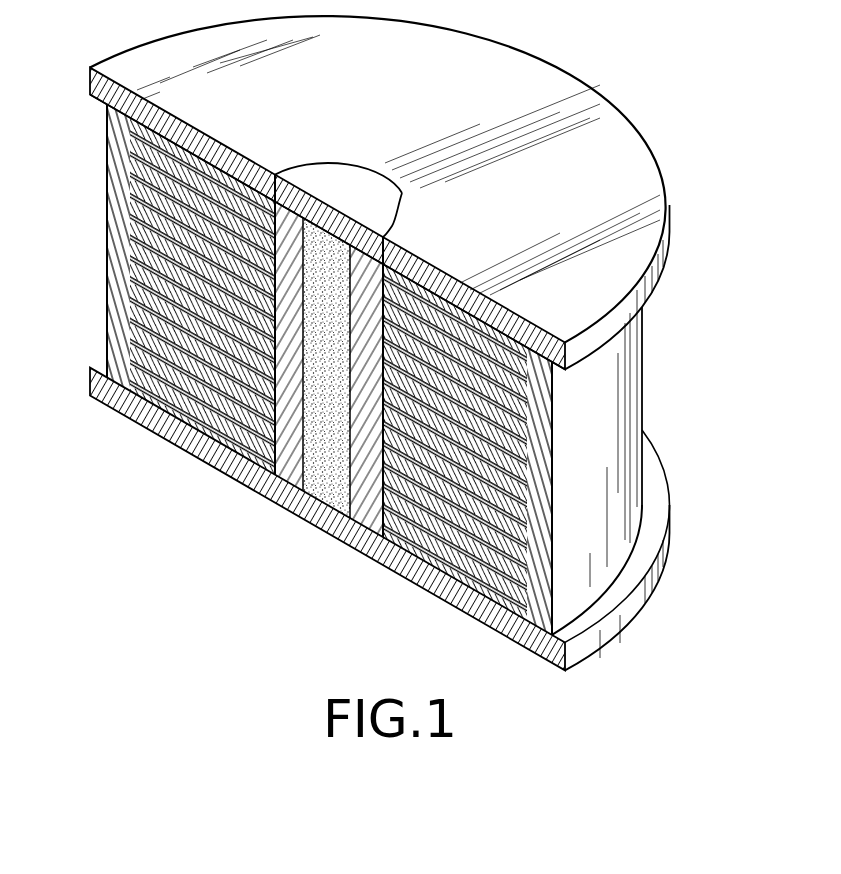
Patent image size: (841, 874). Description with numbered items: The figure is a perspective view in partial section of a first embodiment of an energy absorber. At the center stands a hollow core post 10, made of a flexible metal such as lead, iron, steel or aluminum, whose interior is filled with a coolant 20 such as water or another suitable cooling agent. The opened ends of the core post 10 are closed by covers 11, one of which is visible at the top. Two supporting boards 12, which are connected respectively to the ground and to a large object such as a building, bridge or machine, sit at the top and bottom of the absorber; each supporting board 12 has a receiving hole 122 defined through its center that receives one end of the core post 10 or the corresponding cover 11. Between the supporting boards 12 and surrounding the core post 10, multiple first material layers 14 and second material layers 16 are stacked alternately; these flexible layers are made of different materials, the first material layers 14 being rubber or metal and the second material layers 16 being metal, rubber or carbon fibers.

The core post 10 is at (283, 525).
The cover 11 is at (323, 167).
The supporting board 12 is at (650, 172).
The receiving hole 122 is at (396, 198).
The first material layer 14 is at (117, 307).
The second material layer 16 is at (130, 234).
The coolant 20 is at (330, 497).